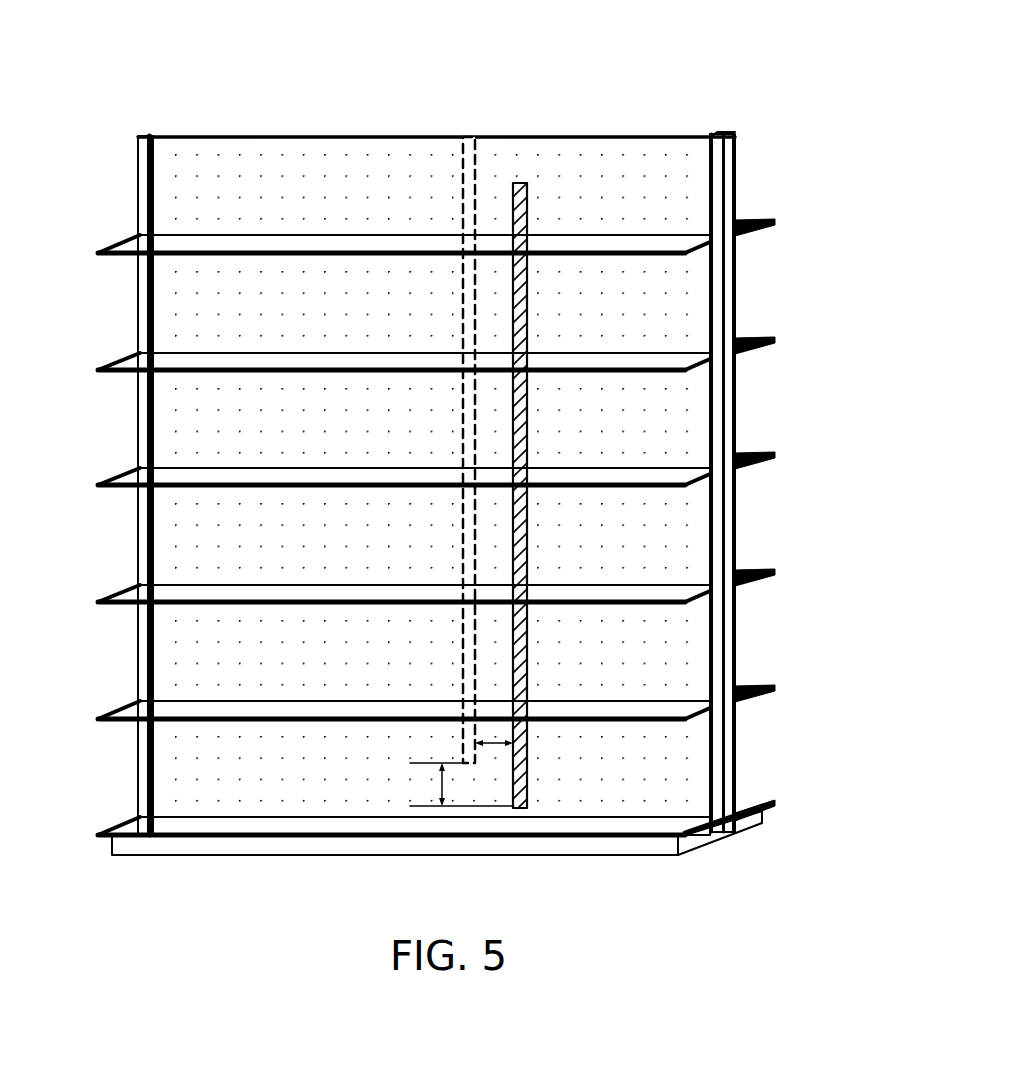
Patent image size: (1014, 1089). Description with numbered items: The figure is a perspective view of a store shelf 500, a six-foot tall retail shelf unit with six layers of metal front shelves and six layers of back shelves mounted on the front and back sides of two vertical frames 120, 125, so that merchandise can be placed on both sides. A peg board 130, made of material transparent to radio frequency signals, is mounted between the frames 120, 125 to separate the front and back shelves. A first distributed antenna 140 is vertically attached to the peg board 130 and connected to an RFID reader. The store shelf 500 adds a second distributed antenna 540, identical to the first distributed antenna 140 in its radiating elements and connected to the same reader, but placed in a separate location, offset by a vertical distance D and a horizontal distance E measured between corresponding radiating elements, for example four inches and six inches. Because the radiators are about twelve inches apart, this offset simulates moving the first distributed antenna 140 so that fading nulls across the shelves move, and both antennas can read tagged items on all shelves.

The store shelf 500 is at (238, 62).
The vertical frame 120 is at (141, 172).
The vertical frame 125 is at (736, 158).
The peg board 130 is at (613, 153).
The distributed antenna 140 is at (528, 200).
The second distributed antenna 540 is at (463, 208).
The vertical distance D is at (440, 783).
The horizontal distance E is at (495, 745).